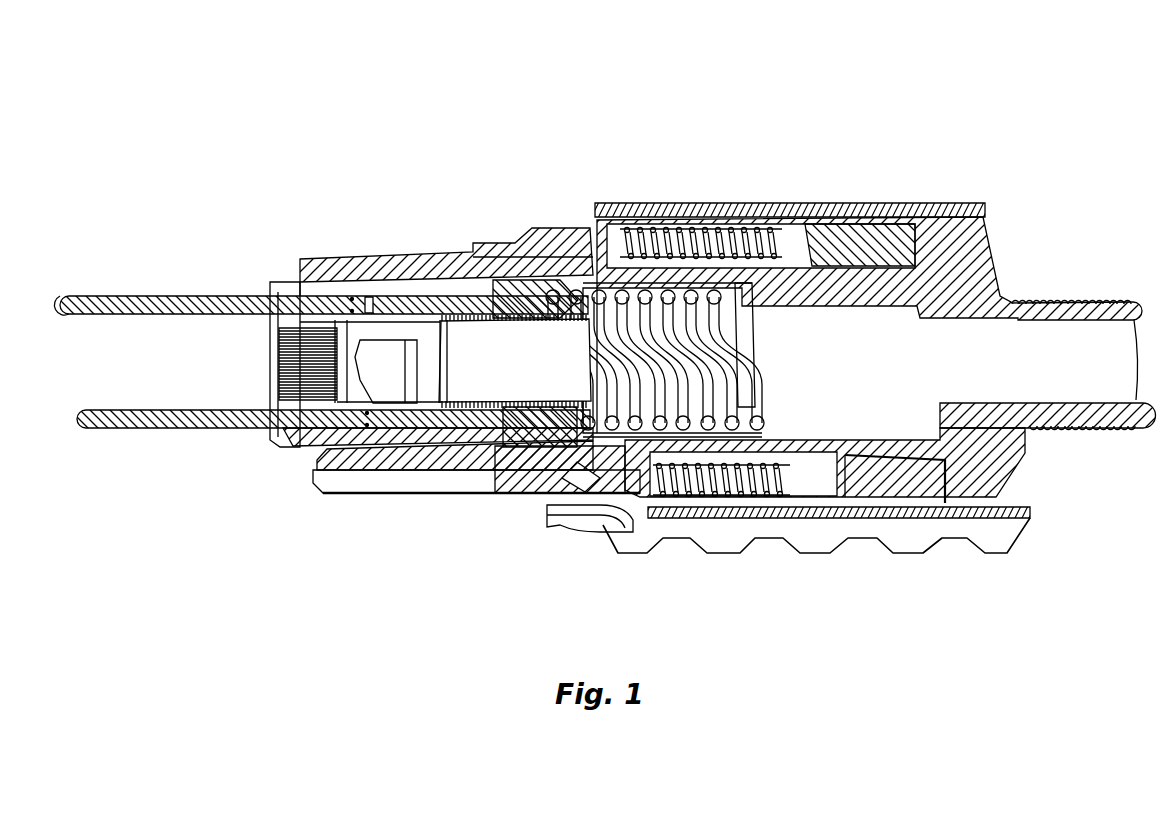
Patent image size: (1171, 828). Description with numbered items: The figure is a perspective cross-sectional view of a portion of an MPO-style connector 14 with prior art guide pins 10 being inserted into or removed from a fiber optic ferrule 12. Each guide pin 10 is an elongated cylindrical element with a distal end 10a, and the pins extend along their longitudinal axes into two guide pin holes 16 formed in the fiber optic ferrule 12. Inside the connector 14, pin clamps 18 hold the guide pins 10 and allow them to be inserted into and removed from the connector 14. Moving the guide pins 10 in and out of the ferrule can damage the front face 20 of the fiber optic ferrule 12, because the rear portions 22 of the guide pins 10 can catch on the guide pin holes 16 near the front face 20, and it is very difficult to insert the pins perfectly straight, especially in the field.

The guide pins 10 is at (187, 294).
The distal end 10a is at (60, 290).
The fiber optic ferrule 12 is at (298, 448).
The MPO-style connector 14 is at (510, 122).
The guide pin holes 16 is at (288, 292).
The pin clamps 18 is at (563, 438).
The front face 20 is at (270, 372).
The rear portions 22 is at (368, 297).